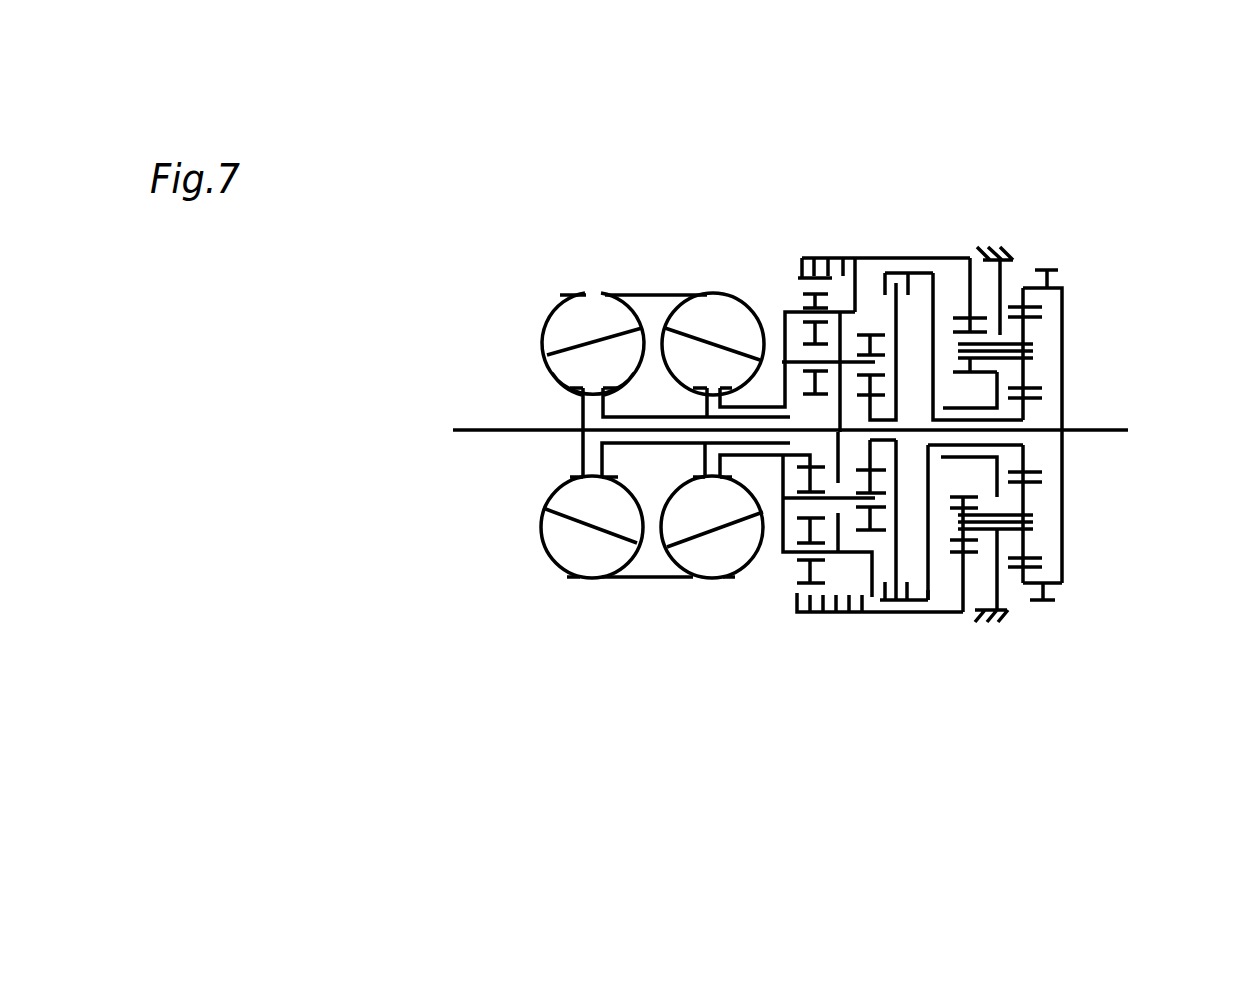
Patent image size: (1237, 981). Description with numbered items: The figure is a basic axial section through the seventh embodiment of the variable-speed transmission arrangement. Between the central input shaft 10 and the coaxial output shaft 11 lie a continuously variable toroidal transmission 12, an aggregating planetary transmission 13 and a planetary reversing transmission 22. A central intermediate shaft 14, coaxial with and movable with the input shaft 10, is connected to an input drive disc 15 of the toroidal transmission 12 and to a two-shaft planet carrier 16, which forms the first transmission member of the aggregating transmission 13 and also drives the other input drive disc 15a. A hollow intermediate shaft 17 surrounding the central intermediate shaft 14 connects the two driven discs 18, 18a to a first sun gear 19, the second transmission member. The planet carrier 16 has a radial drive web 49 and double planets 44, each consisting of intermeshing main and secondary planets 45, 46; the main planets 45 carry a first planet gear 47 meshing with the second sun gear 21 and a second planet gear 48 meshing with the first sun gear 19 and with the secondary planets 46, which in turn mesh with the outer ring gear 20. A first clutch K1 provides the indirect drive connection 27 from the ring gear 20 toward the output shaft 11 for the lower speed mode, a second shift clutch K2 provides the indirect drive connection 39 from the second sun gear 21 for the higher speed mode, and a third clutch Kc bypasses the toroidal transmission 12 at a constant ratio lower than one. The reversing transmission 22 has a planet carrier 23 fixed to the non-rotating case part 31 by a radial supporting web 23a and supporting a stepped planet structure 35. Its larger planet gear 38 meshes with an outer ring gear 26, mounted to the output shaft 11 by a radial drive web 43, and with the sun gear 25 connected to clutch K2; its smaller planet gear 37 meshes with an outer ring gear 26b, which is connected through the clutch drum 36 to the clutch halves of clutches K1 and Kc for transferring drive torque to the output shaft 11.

The input shaft 10 is at (466, 432).
The output shaft 11 is at (1126, 437).
The continuously variable toroidal transmission 12 is at (622, 192).
The aggregating planetary transmission 13 is at (837, 182).
The central intermediate shaft 14 is at (597, 423).
The input drive disc 15 is at (575, 294).
The other input drive disc 15a is at (783, 528).
The two-shaft planet carrier 16 is at (838, 306).
The hollow intermediate shaft 17 is at (663, 447).
The driven disc 18 is at (605, 295).
The driven disc 18a is at (672, 310).
The first sun gear 19 is at (797, 393).
The outer ring gear 20 is at (797, 278).
The second sun gear 21 is at (882, 407).
The planetary reversing transmission 22 is at (1040, 205).
The planet carrier 23 is at (1012, 278).
The radial supporting web 23a is at (1000, 583).
The sun gear 25 is at (1040, 473).
The outer ring gear 26 is at (1060, 578).
The outer ring gear 26b is at (957, 318).
The indirect drive connection 27 is at (943, 617).
The non-rotating case part 31 is at (1008, 280).
The stepped planet structure 35 is at (1033, 367).
The clutch drum 36 is at (827, 617).
The planet gear 37 is at (985, 400).
The planet gear 38 is at (1043, 317).
The indirect drive connection 39 is at (940, 610).
The radial drive web 43 is at (1060, 547).
The double planets 44 is at (730, 535).
The main planets 45 is at (932, 468).
The secondary planets 46 is at (800, 573).
The first planet gear 47 is at (870, 333).
The second planet gear 48 is at (795, 343).
The radial drive web 49 is at (884, 518).
The first clutch K1 is at (803, 617).
The third clutch Kc is at (845, 617).
The second shift clutch K2 is at (888, 615).